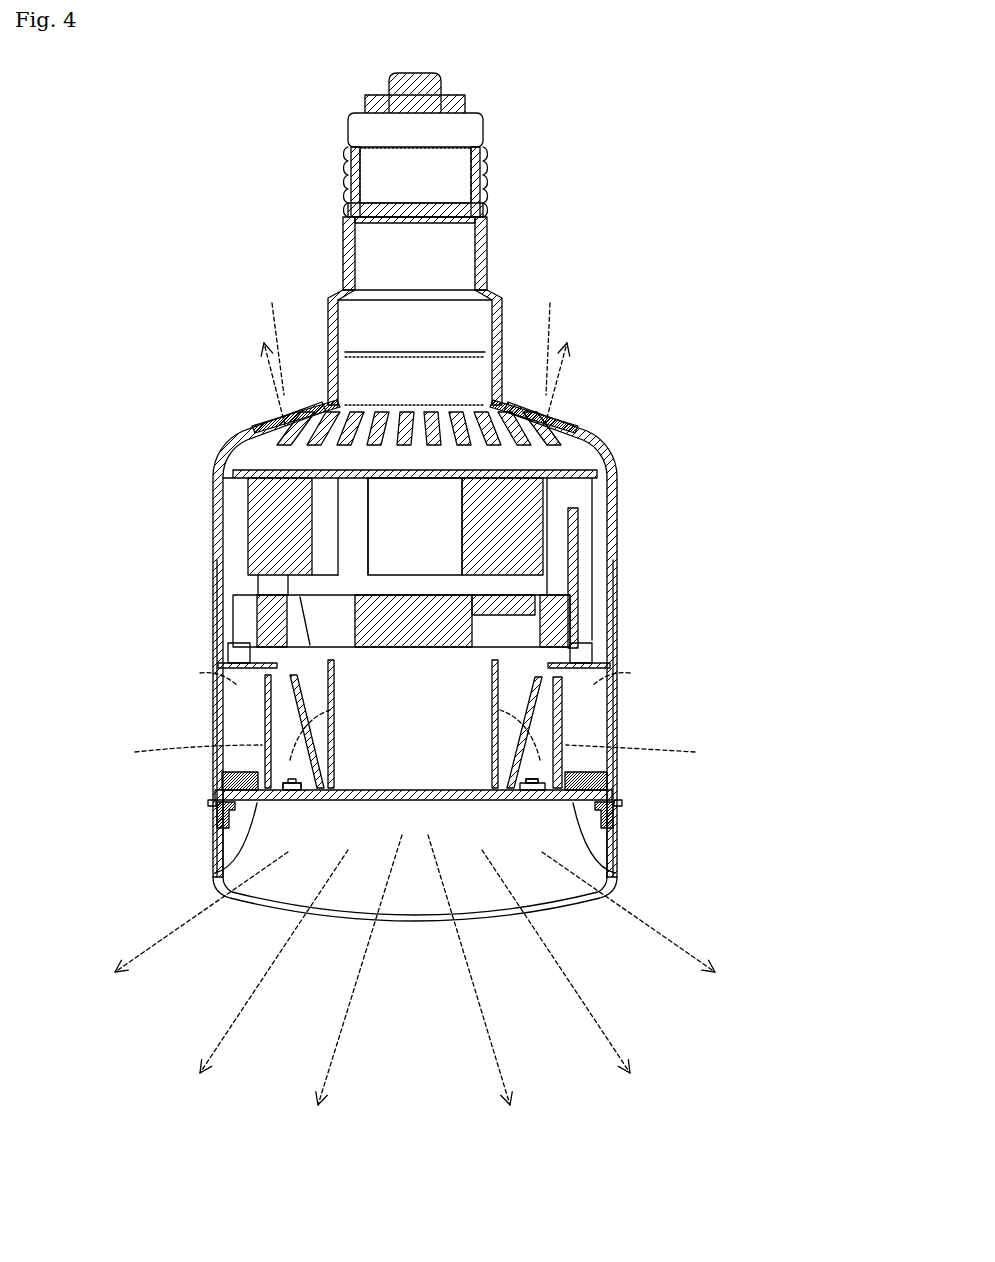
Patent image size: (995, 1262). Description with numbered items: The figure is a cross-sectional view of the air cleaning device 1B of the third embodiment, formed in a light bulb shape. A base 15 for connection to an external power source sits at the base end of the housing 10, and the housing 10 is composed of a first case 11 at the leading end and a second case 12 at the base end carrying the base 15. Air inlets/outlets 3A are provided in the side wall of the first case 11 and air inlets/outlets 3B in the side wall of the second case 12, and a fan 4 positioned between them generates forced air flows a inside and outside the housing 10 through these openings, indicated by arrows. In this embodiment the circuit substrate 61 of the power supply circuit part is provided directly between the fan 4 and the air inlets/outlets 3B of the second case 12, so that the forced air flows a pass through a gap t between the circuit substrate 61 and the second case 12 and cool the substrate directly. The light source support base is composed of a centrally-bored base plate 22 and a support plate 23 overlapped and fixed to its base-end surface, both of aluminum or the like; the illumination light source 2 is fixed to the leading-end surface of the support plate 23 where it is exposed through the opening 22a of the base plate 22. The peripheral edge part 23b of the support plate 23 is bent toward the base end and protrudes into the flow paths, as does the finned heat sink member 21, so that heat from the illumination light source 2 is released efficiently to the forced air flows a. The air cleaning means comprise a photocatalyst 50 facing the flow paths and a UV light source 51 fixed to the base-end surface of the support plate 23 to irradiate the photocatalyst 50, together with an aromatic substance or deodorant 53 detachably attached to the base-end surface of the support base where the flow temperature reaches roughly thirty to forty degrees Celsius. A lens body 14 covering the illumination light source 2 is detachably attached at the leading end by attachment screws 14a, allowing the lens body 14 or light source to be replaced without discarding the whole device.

The base 15 is at (348, 128).
The air cleaning device 1B is at (592, 269).
The circuit substrate 61 is at (582, 440).
The air inlets/outlets 3B is at (256, 424).
The housing 10 is at (622, 591).
The second case 12 is at (618, 522).
The gap t is at (226, 463).
The fan 4 is at (415, 600).
The photocatalyst 50 is at (228, 681).
The air inlets/outlets 3A is at (220, 702).
The reflector wall 23b is at (268, 712).
The heat sink member 21 is at (317, 512).
The illumination light source 2 is at (367, 803).
The base plate 22 is at (506, 800).
The opening 22a is at (476, 800).
The support plate 23 is at (258, 797).
The first case 11 is at (615, 773).
The aromatic substance or deodorant 53 is at (222, 781).
The attachment screws 14a is at (208, 810).
The lens body 14 is at (322, 918).
The UV light source 51 is at (214, 869).
The forced air flows a is at (407, 524).